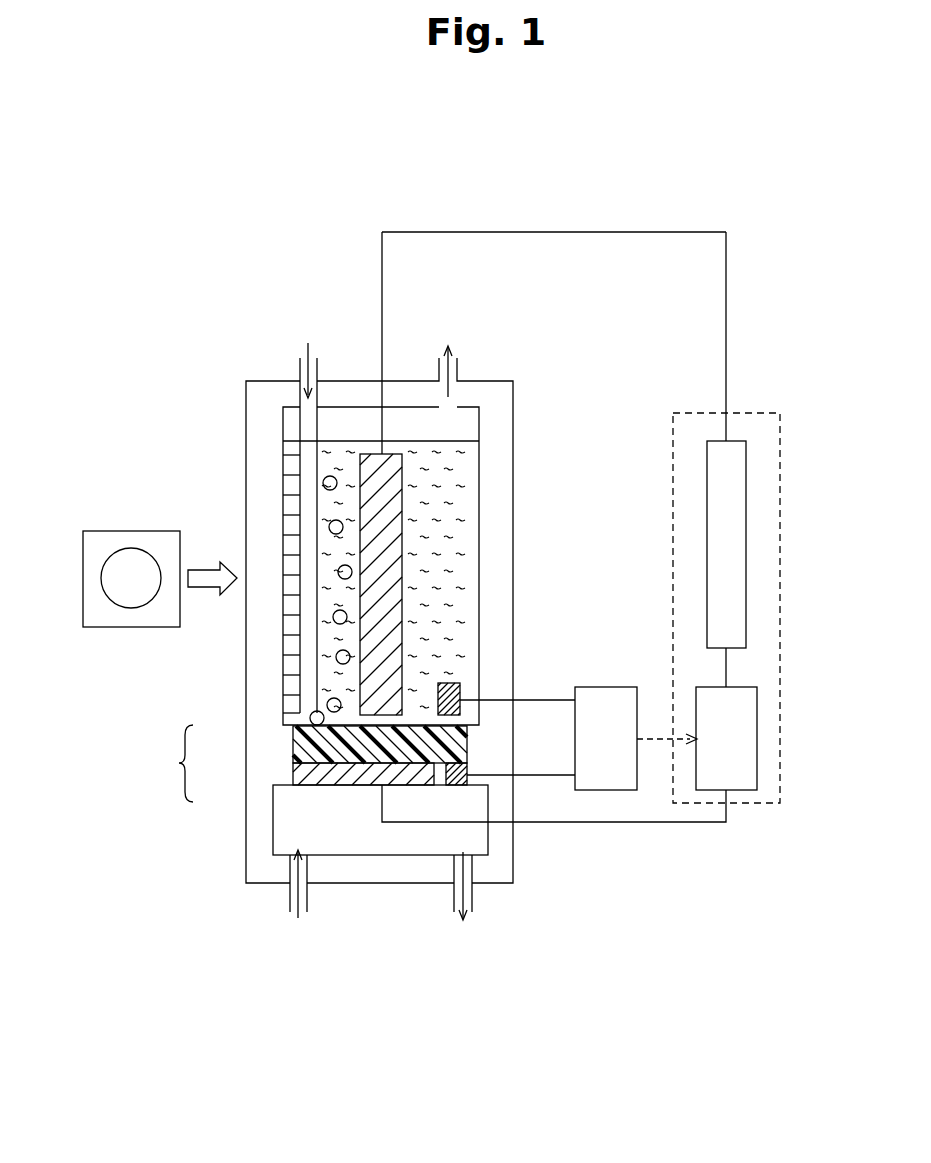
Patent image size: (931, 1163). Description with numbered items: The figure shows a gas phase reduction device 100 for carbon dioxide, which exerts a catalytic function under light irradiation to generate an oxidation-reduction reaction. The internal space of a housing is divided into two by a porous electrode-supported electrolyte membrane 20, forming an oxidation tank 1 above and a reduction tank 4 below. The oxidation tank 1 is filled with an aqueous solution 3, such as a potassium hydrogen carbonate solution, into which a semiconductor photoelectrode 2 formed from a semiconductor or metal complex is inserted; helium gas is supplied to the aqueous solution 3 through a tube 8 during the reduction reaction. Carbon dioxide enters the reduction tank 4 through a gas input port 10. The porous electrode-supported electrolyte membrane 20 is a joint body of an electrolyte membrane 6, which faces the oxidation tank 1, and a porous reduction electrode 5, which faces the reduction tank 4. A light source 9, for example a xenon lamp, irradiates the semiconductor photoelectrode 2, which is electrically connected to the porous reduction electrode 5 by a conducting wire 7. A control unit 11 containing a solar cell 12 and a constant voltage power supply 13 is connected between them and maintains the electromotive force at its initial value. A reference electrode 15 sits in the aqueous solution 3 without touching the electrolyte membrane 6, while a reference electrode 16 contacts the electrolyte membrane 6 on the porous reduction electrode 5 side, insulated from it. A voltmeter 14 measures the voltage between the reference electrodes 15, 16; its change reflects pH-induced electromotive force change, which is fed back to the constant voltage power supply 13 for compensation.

The gas phase reduction device 100 is at (660, 211).
The oxidation tank 1 is at (290, 425).
The semiconductor photoelectrode 2 is at (368, 496).
The aqueous solution 3 is at (290, 663).
The reduction tank 4 is at (382, 835).
The porous reduction electrode 5 is at (293, 776).
The electrolyte membrane 6 is at (293, 743).
The conducting wire 7 is at (380, 262).
The tube 8 is at (298, 358).
The light source 9 is at (131, 556).
The gas input port 10 is at (289, 895).
The control unit 11 is at (765, 412).
The solar cell 12 is at (746, 519).
The constant voltage power supply 13 is at (757, 731).
The voltmeter 14 is at (612, 687).
The reference electrode 15 is at (456, 686).
The reference electrode 16 is at (468, 769).
The porous electrode-supported electrolyte membrane 20 is at (168, 763).